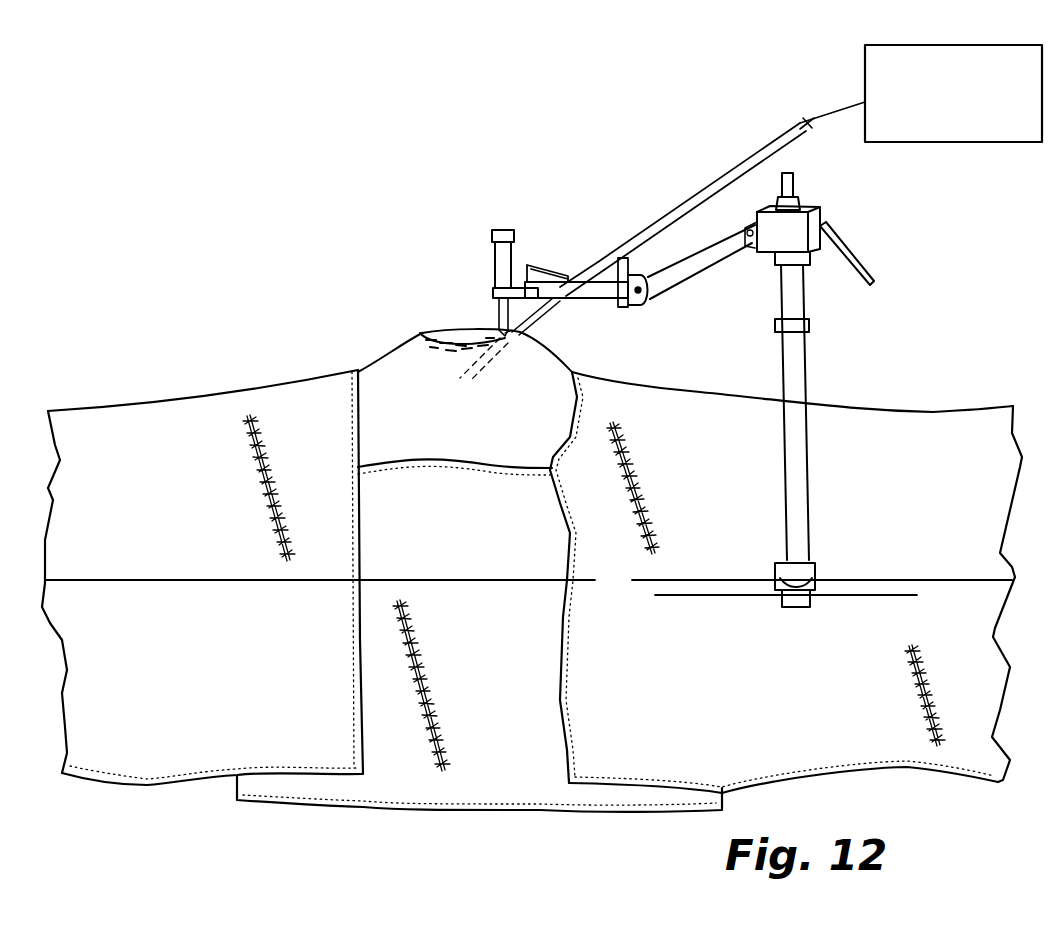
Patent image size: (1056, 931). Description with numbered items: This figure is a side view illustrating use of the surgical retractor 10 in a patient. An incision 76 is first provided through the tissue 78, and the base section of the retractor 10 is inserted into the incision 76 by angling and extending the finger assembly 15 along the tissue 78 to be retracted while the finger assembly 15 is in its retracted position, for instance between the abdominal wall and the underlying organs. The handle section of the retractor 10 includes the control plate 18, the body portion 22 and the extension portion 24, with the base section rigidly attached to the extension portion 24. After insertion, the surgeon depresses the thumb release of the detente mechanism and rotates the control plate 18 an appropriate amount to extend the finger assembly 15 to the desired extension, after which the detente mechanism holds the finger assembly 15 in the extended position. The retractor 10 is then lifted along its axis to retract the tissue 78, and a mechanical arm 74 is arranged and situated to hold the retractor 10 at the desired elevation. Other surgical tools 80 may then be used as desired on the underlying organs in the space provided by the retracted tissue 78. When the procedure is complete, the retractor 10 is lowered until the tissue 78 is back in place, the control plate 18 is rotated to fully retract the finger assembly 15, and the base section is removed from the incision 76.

The surgical retractor 10 is at (380, 233).
The finger assembly 15 is at (423, 333).
The control plate 18 is at (495, 231).
The body portion 22 is at (513, 259).
The extension portion 24 is at (494, 310).
The mechanical arm 74 is at (836, 207).
The incision 76 is at (520, 334).
The tissue 78 is at (390, 375).
The surgical tools 80 is at (764, 152).